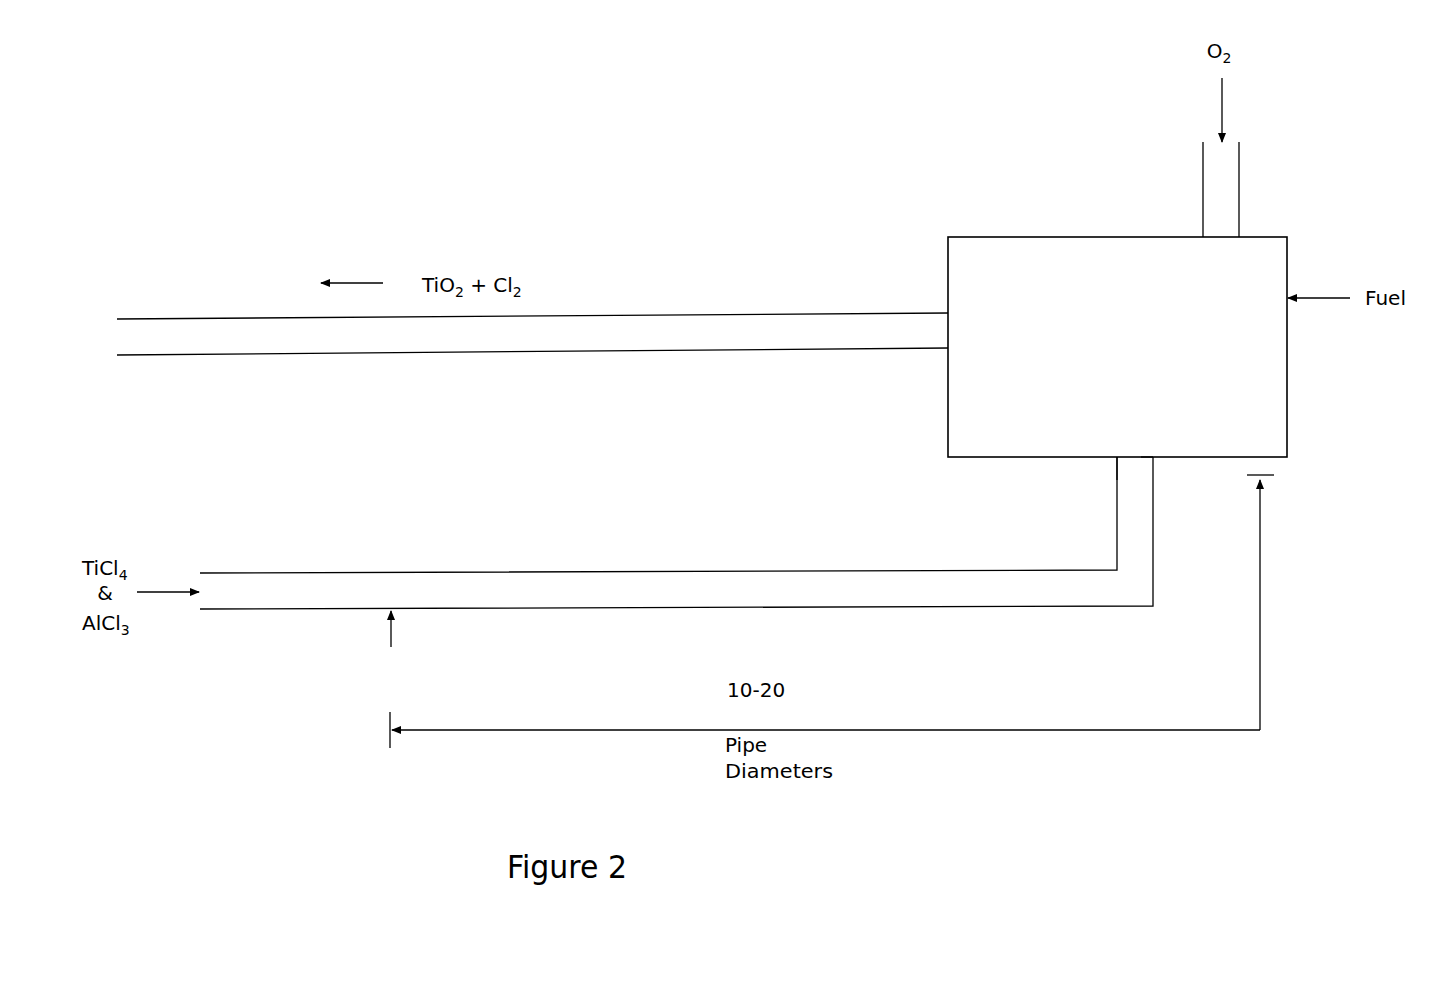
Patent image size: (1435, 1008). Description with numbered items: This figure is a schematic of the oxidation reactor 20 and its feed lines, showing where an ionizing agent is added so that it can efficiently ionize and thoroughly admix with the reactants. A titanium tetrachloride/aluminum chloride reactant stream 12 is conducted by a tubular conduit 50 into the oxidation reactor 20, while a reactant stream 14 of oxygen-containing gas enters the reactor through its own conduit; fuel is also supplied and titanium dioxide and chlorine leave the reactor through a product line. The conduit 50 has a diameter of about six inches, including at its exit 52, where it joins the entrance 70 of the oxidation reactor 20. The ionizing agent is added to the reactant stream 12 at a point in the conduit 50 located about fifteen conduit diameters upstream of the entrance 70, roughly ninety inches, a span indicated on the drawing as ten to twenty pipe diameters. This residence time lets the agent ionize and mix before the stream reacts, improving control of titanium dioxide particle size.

The reactant stream 12 is at (448, 592).
The reactant stream 14 is at (1218, 188).
The oxidation reactor 20 is at (1117, 347).
The tubular conduit 50 is at (615, 592).
The exit 52 is at (1141, 456).
The entrance 70 is at (1141, 456).